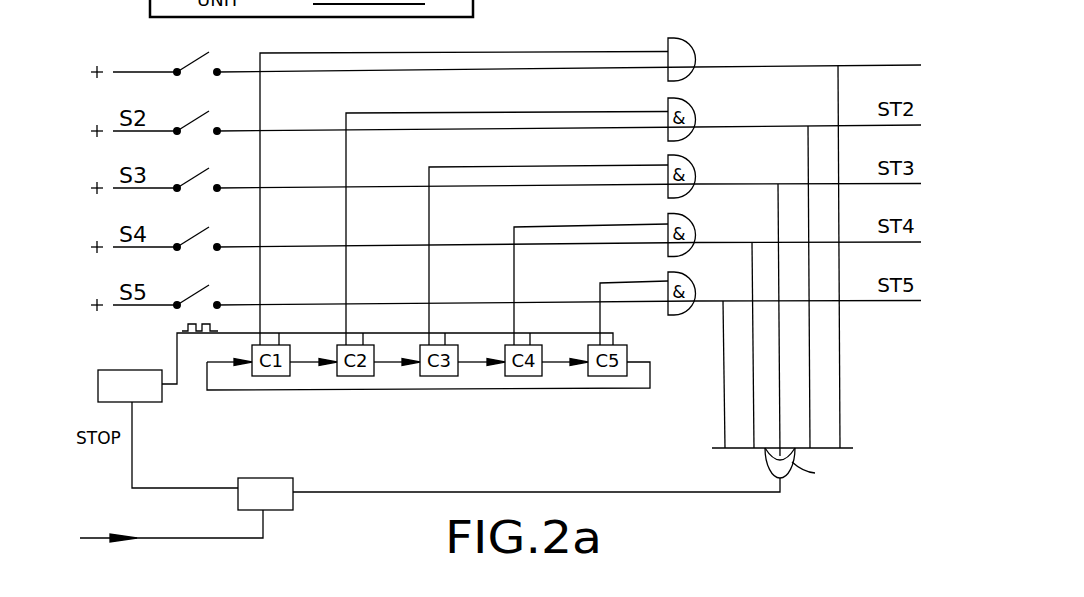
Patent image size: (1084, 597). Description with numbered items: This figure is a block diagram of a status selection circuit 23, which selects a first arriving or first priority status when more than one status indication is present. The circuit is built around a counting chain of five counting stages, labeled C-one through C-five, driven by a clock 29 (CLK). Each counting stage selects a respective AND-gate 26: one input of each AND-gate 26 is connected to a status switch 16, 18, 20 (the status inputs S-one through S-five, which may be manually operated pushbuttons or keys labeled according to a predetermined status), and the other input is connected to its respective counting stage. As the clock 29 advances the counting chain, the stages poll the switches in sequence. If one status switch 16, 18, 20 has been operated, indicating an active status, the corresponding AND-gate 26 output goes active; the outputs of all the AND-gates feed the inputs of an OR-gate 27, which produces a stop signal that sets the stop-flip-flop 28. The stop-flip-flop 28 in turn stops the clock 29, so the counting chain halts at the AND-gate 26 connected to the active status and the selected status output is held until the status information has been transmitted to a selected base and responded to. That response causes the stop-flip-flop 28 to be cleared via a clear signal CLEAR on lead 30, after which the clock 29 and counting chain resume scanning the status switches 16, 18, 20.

The status switch 16 is at (161, 51).
The status switch 18 is at (161, 51).
The status switch 20 is at (185, 66).
The status selection circuit 23 is at (778, 48).
The AND-gate 26 is at (649, 32).
The OR-gate 27 is at (770, 462).
The stop-flip-flop 28 is at (263, 478).
The clock 29 is at (137, 370).
The lead 30 is at (243, 539).